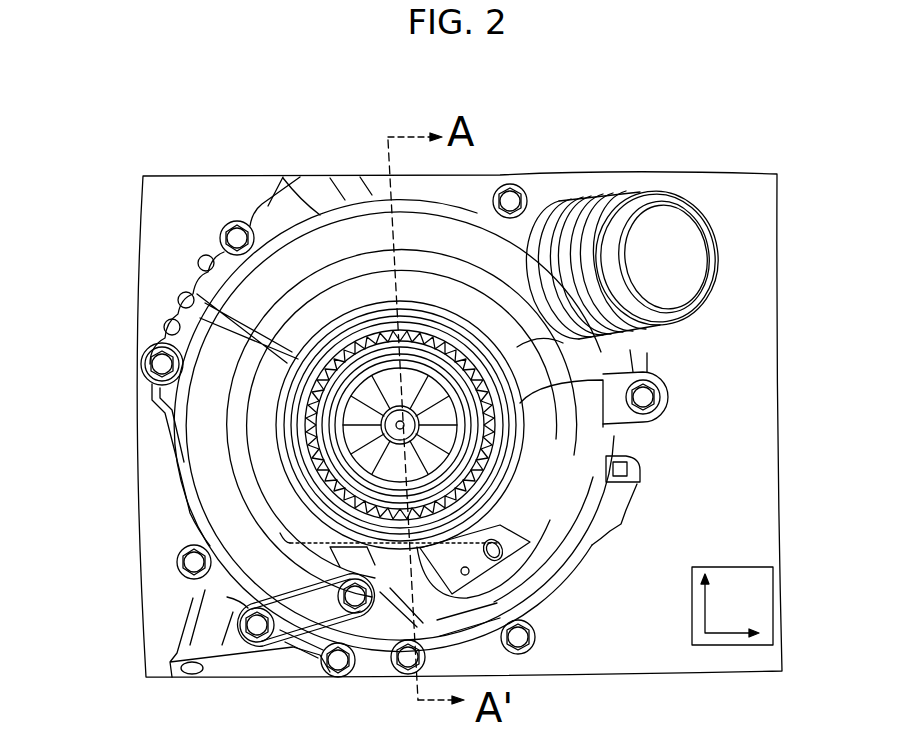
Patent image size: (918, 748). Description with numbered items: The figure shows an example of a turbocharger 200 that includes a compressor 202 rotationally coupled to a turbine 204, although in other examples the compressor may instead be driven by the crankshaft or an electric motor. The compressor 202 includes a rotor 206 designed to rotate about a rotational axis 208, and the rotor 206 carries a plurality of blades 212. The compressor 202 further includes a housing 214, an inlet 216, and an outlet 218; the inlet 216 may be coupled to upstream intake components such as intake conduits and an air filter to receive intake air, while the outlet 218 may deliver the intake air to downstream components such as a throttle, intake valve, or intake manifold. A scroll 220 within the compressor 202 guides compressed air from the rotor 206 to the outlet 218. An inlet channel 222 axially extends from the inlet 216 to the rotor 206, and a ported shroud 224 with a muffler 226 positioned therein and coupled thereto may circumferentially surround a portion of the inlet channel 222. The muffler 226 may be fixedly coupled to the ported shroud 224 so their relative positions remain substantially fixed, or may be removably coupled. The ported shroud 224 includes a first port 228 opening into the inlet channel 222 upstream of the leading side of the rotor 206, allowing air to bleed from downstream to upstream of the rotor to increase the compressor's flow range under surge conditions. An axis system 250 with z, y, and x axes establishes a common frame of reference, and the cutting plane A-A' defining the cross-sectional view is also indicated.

The turbocharger 200 is at (178, 194).
The compressor 202 is at (642, 438).
The turbine 204 is at (162, 271).
The rotor 206 is at (363, 465).
The rotational axis 208 is at (397, 427).
The blades 212 is at (446, 356).
The housing 214 is at (281, 214).
The inlet 216 is at (425, 582).
The outlet 218 is at (722, 183).
The scroll 220 is at (478, 262).
The inlet channel 222 is at (480, 452).
The ported shroud 224 is at (332, 358).
The muffler 226 is at (378, 364).
The first port 228 is at (413, 356).
The axis system 250 is at (701, 567).